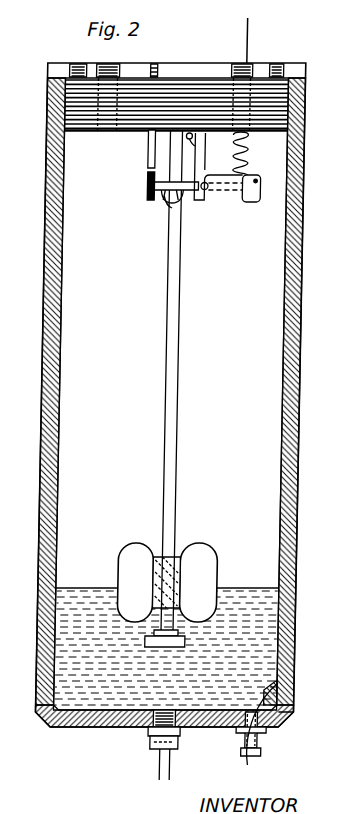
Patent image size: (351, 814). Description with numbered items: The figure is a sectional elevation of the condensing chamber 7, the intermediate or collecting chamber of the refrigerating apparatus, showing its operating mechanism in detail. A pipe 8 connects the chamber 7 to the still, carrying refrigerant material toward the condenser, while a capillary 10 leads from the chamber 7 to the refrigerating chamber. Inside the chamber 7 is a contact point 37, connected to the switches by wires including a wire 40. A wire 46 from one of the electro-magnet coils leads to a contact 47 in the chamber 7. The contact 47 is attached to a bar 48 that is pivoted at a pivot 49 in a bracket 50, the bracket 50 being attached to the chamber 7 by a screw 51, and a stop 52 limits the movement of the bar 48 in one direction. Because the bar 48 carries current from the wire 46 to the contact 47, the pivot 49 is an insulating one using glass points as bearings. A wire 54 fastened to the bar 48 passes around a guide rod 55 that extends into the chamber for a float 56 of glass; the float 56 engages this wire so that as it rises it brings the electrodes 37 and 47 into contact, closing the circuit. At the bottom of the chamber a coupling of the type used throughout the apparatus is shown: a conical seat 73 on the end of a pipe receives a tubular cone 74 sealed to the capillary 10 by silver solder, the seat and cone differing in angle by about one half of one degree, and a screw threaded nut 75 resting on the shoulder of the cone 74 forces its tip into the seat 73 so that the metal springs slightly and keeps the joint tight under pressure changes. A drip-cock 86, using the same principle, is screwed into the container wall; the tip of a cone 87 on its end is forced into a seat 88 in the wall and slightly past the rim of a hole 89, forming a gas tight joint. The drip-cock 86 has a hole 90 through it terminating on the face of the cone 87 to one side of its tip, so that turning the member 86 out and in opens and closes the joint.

The condensing chamber 7 is at (50, 199).
The pipe 8 is at (113, 64).
The capillary 10 is at (184, 775).
The contact point 37 is at (151, 152).
The wire 40 is at (156, 63).
The wire 46 is at (249, 48).
The contact 47 is at (151, 190).
The bar 48 is at (165, 194).
The pivot 49 is at (210, 190).
The bracket 50 is at (247, 200).
The screw 51 is at (195, 138).
The stop 52 is at (252, 172).
The wire 54 is at (170, 206).
The guide rod 55 is at (185, 323).
The float 56 is at (212, 558).
The conical seat 73 is at (191, 738).
The tubular cone 74 is at (163, 741).
The screw threaded nut 75 is at (165, 752).
The drip-cock 86 is at (276, 751).
The cone 87 is at (247, 735).
The seat 88 is at (306, 711).
The hole 89 is at (307, 680).
The hole 90 is at (256, 736).